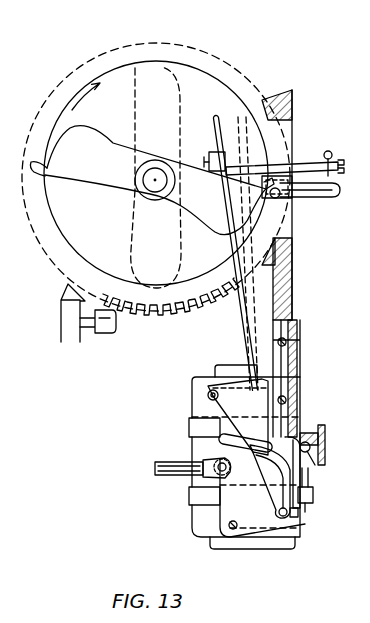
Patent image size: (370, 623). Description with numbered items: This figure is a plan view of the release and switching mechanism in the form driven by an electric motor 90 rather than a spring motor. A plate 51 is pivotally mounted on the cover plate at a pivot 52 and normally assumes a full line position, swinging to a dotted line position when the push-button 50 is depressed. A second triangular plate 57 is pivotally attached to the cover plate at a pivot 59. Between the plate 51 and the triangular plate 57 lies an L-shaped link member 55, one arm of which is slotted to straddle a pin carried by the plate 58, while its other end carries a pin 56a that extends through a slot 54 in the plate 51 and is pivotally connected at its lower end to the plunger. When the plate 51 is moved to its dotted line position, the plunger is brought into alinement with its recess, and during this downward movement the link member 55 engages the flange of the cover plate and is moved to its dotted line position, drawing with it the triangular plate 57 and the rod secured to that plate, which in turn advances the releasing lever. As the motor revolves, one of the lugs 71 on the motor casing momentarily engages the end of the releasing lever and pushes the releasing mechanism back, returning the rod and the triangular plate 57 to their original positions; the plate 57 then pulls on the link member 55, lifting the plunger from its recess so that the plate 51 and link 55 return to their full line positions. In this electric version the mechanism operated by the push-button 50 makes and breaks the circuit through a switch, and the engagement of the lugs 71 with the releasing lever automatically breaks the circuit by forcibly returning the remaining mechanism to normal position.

The push-button 50 is at (170, 464).
The plate 51 is at (262, 498).
The pivot 52 is at (229, 527).
The slot 54 is at (299, 512).
The L-shaped link member 55 is at (302, 488).
The pin 56a is at (294, 513).
The second triangular plate 57 is at (258, 436).
The plate 58 is at (228, 400).
The pivot 59 is at (210, 394).
The lugs 71 is at (45, 178).
The electric motor 90 is at (262, 546).